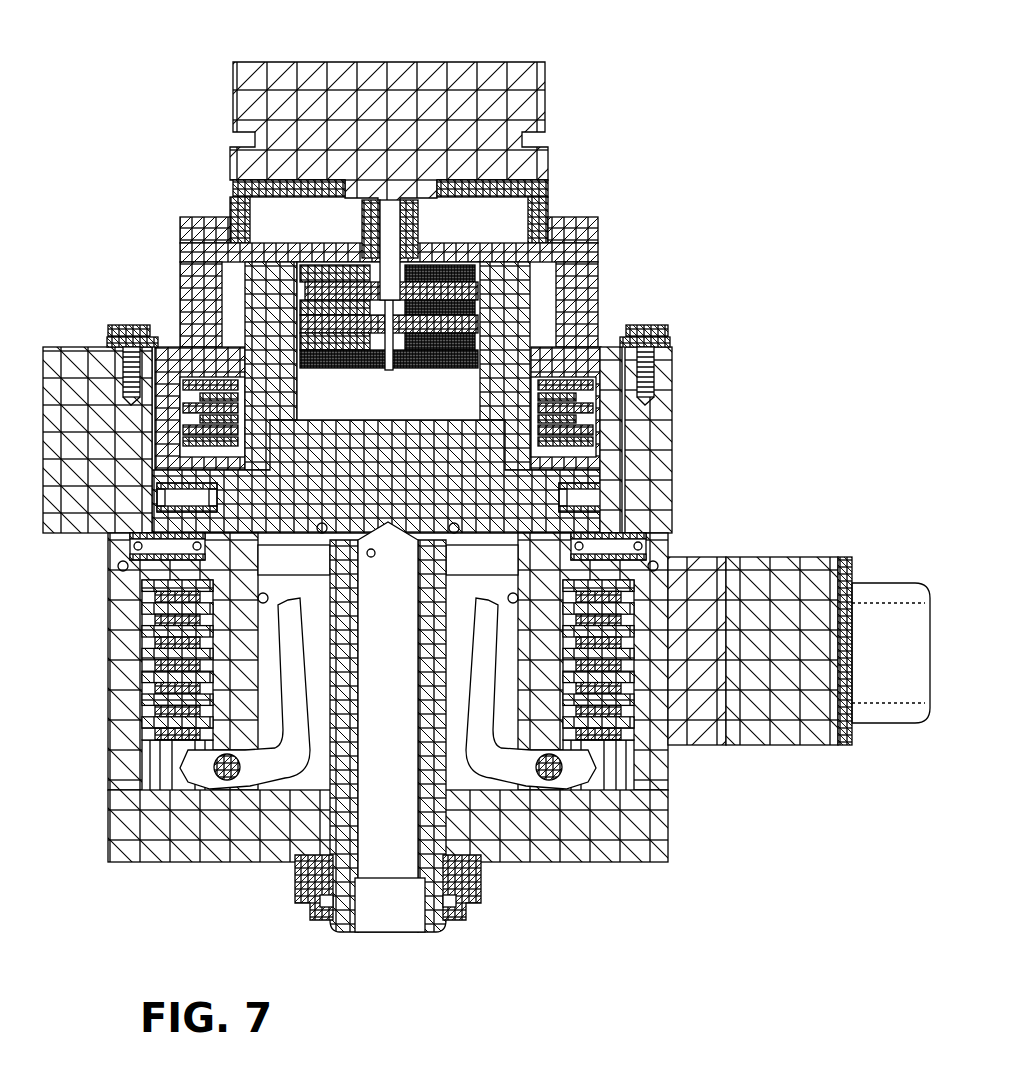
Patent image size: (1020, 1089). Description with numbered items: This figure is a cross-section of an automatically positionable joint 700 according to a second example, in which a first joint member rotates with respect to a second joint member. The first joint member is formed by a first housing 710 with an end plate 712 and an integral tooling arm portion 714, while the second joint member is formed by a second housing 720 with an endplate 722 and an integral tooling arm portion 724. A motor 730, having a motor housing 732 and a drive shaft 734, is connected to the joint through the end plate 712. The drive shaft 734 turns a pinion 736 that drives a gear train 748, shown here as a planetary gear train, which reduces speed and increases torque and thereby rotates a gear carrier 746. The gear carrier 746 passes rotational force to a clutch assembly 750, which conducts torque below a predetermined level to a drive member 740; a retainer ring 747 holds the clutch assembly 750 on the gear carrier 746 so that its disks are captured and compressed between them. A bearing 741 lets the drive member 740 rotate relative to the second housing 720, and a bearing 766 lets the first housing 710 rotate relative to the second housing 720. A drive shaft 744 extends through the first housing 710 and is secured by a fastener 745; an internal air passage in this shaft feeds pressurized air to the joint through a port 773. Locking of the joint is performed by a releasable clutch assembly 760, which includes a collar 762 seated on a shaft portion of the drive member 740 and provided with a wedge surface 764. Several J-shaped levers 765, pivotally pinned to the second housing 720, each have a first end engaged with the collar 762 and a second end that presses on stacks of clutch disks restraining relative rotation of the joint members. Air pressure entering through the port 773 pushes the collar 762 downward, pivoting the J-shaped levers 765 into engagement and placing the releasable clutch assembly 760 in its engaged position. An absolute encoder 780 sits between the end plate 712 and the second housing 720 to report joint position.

The automatically positionable joint 700 is at (98, 106).
The motor 730 is at (550, 82).
The motor housing 732 is at (546, 190).
The drive shaft 734 is at (406, 242).
The pinion 736 is at (368, 212).
The endplate 722 is at (600, 256).
The integral tooling arm portion 724 is at (74, 354).
The gear train 748 is at (246, 296).
The retainer ring 747 is at (596, 335).
The second housing 720 is at (673, 376).
The clutch assembly 750 is at (603, 423).
The gear carrier 746 is at (590, 456).
The drive member 740 is at (622, 478).
The bearing 741 is at (606, 490).
The integral tooling arm portion 714 is at (810, 557).
The bearing 766 is at (128, 547).
The releasable clutch assembly 760 is at (144, 641).
The first housing 710 is at (110, 650).
The J-shaped levers 765 is at (210, 769).
The collar 762 is at (292, 577).
The port 773 is at (374, 557).
The wedge surface 764 is at (262, 648).
The absolute encoder 780 is at (506, 800).
The fastener 745 is at (482, 892).
The drive shaft 744 is at (446, 926).
The end plate 712 is at (656, 845).